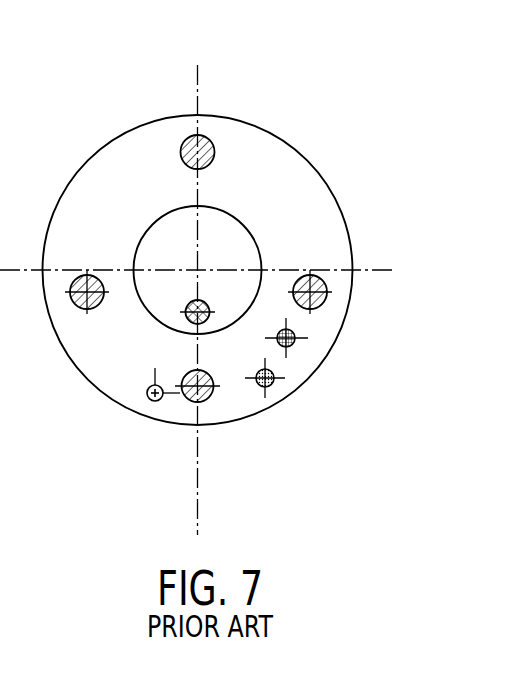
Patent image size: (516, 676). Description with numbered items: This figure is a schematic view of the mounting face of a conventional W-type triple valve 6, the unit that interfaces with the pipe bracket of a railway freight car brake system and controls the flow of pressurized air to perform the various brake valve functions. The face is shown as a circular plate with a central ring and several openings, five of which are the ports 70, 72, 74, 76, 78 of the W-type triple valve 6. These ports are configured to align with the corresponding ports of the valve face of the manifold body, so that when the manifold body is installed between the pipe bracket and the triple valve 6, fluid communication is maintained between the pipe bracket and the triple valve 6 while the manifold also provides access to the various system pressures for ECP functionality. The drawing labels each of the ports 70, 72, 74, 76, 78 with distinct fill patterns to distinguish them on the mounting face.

The W-type triple valve unit 6 is at (336, 100).
The port 70 is at (228, 303).
The port 72 is at (318, 342).
The port 74 is at (291, 384).
The port 76 is at (236, 401).
The port 78 is at (134, 400).